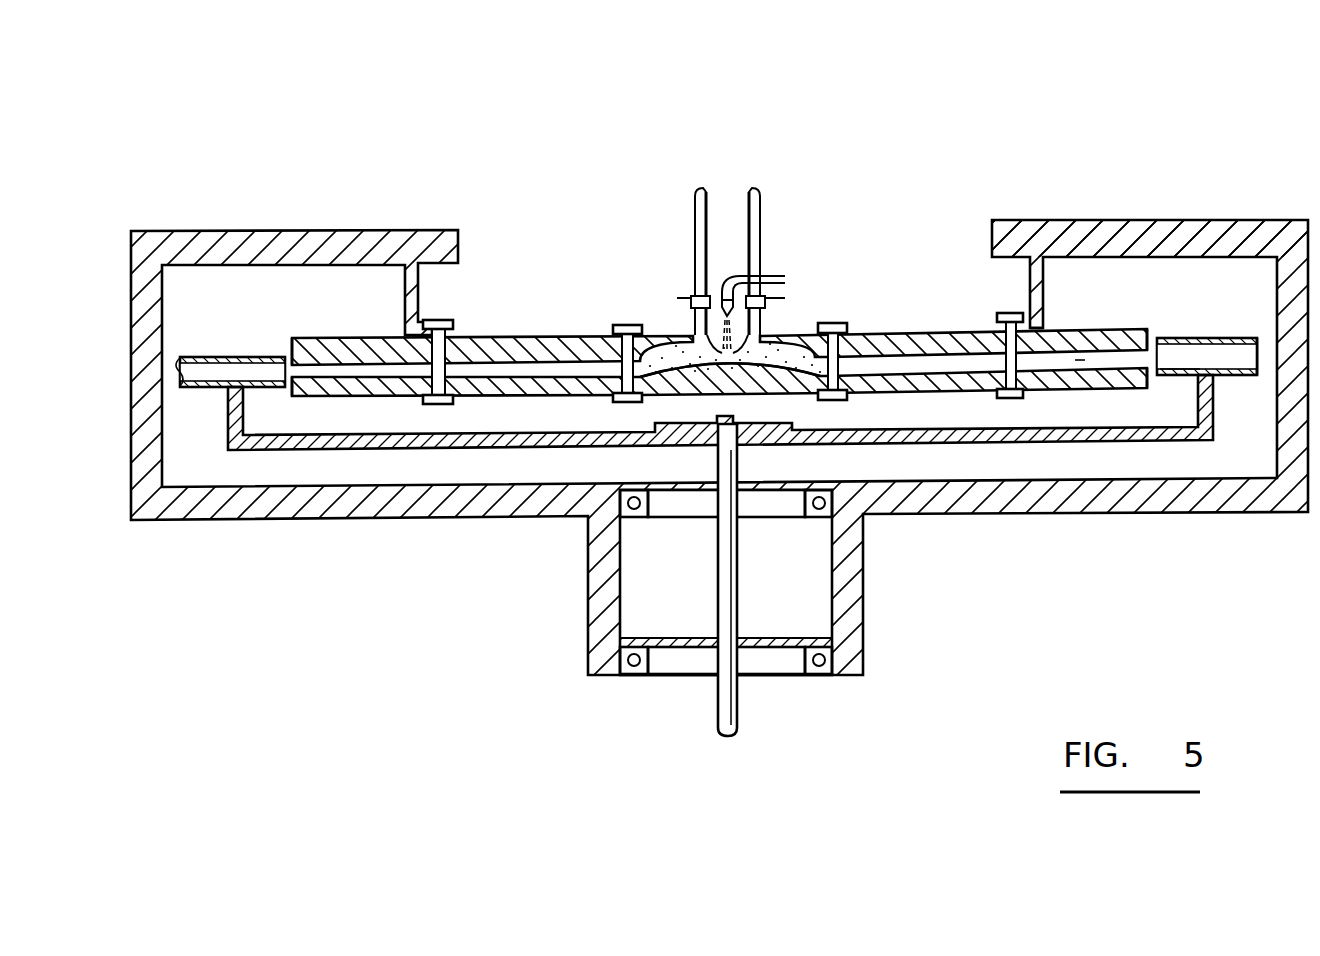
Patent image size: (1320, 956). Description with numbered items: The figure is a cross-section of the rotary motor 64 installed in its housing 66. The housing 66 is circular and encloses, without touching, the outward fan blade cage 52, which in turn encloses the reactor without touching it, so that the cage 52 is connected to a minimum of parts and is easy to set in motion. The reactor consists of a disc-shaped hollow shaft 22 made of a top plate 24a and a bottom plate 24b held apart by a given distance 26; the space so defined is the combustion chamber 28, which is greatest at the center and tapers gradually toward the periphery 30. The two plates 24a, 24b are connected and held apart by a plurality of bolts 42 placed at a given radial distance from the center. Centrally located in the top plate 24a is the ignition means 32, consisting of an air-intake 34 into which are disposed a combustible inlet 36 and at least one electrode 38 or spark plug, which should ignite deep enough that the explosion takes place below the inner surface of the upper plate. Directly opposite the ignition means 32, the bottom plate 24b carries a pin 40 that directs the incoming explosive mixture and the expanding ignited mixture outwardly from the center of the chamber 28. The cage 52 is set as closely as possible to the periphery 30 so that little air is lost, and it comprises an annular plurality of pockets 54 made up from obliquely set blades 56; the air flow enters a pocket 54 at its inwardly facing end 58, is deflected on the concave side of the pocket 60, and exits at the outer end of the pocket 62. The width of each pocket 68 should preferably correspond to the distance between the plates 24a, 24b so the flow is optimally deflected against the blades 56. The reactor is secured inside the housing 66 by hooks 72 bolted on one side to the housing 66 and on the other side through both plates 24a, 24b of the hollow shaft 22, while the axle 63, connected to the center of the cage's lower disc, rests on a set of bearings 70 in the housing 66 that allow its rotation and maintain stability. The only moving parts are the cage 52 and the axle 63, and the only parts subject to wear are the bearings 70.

The disc-shaped hollow shaft 22 is at (550, 330).
The top plate 24a is at (950, 336).
The bottom plate 24b is at (953, 383).
The distance 26 is at (1080, 360).
The combustion chamber 28 is at (758, 360).
The periphery 30 is at (302, 374).
The ignition means 32 is at (709, 242).
The air-intake 34 is at (723, 200).
The combustible inlet 36 is at (777, 276).
The electrode 38 is at (784, 298).
The pin 40 is at (730, 372).
The bolts 42 is at (422, 388).
The fan blade cage 52 is at (575, 448).
The pockets 54 is at (1205, 338).
The blades 56 is at (232, 375).
The inwardly facing end 58 is at (1148, 362).
The concave side of the pocket 60 is at (1208, 358).
The outer end of the pocket 62 is at (1258, 355).
The axle 63 is at (740, 595).
The motor 64 is at (1132, 128).
The housing 66 is at (405, 520).
The width of each pocket 68 is at (176, 366).
The bearings 70 is at (680, 508).
The hooks 72 is at (1040, 301).